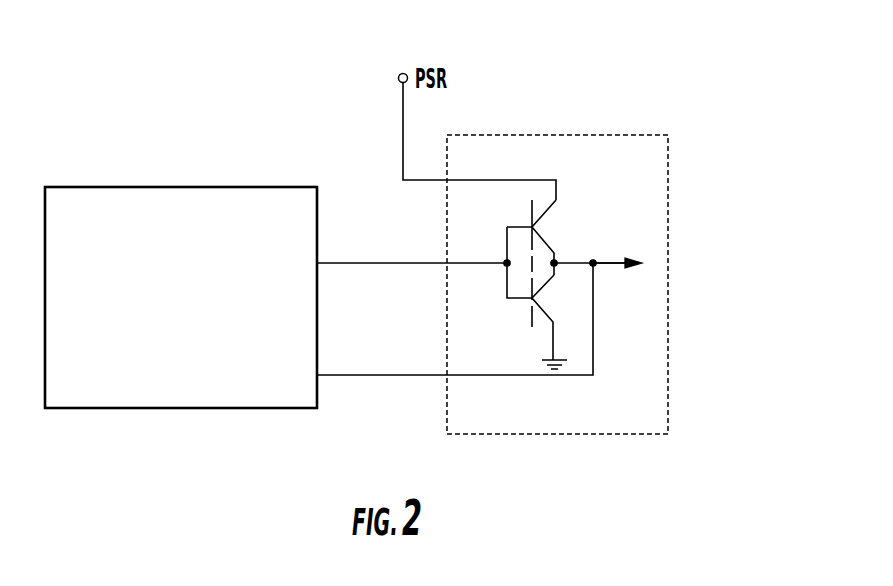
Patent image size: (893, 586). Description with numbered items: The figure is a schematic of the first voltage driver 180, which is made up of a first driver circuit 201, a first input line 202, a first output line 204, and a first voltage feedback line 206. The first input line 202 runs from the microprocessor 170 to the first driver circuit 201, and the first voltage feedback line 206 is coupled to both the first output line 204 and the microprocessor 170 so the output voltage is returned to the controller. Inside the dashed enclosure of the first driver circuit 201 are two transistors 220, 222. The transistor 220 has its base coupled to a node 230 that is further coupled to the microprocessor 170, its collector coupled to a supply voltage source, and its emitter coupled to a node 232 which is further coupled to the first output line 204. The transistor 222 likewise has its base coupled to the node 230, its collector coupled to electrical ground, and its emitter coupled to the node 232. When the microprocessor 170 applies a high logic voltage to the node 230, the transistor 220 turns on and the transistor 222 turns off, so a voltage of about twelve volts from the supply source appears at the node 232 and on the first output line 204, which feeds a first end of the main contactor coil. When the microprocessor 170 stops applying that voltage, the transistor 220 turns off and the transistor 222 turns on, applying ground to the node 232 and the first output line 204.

The microprocessor 170 is at (212, 187).
The first voltage driver 180 is at (700, 85).
The first driver circuit 201 is at (563, 135).
The first input line 202 is at (379, 263).
The first output line 204 is at (608, 267).
The first voltage feedback line 206 is at (353, 375).
The transistor 220 is at (552, 205).
The transistor 222 is at (553, 320).
The node 230 is at (505, 265).
The node 232 is at (595, 262).